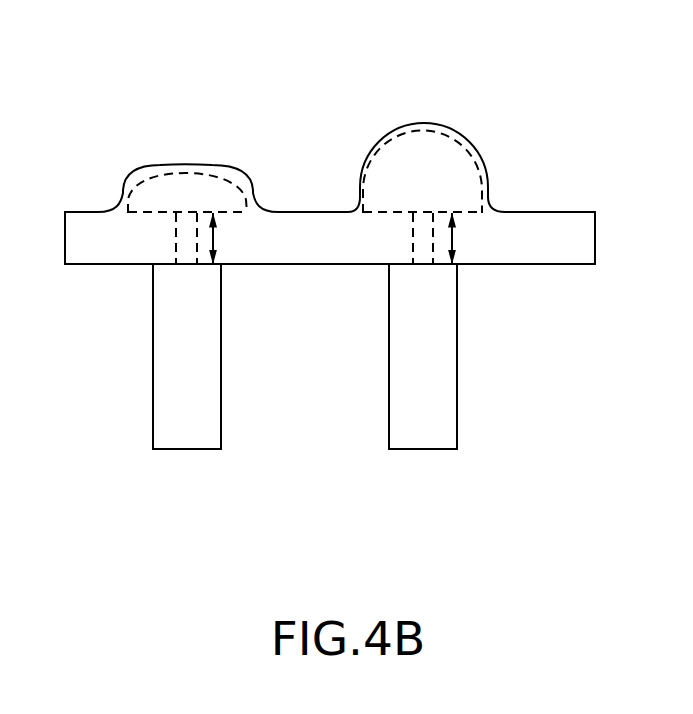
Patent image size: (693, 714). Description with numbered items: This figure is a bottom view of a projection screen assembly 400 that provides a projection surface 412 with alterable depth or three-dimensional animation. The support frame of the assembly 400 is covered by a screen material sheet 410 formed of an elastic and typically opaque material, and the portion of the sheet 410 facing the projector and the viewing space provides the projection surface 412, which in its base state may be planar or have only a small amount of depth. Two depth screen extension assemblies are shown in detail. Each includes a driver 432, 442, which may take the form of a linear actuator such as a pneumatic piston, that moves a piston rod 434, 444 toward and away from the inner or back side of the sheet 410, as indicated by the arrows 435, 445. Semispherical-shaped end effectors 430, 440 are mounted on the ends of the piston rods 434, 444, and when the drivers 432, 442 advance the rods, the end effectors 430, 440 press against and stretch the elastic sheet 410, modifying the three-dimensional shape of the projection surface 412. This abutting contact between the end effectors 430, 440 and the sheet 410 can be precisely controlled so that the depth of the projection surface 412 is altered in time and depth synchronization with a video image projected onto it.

The projection screen assembly 400 is at (150, 108).
The screen material sheet 410 is at (595, 247).
The projection surface 412 is at (548, 212).
The first end effector 430 is at (219, 175).
The second end effector 440 is at (459, 146).
The first driver 432 is at (145, 418).
The second driver 442 is at (483, 378).
The first piston rod 434 is at (178, 220).
The second piston rod 444 is at (413, 220).
The first motion arrow 435 is at (216, 239).
The second motion arrow 445 is at (455, 239).